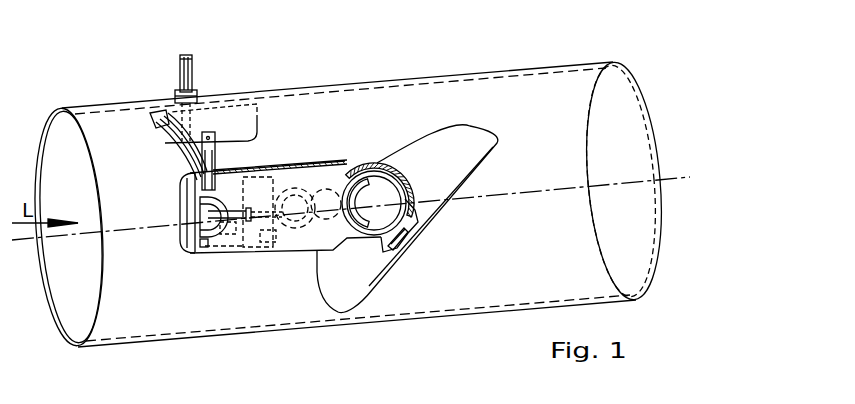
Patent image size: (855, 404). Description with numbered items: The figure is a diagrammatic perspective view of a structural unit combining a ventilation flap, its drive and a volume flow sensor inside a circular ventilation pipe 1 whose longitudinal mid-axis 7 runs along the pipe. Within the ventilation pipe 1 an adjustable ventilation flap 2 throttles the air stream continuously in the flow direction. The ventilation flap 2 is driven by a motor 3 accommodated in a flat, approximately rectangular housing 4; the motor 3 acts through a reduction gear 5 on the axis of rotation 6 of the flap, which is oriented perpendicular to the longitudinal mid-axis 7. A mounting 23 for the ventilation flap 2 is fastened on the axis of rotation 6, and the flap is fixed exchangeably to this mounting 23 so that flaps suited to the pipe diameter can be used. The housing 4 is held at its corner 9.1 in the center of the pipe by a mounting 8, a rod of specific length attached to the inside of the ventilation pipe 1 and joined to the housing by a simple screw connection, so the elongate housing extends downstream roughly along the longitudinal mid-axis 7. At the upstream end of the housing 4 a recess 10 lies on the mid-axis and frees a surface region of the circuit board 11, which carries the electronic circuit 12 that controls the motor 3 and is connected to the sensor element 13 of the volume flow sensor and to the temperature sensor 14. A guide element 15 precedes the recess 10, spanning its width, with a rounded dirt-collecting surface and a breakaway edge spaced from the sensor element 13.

The ventilation pipe 1 is at (78, 347).
The ventilation flap 2 is at (340, 303).
The motor 3 is at (290, 193).
The housing 4 is at (312, 180).
The reduction gear 5 is at (325, 202).
The axis of rotation 6 is at (371, 202).
The longitudinal mid-axis 7 is at (671, 176).
The mounting 8 is at (227, 122).
The corner 9.1 is at (158, 114).
The recess 10 is at (226, 228).
The circuit board 11 is at (268, 236).
The electronic circuit 12 is at (253, 212).
The sensor element 13 is at (208, 213).
The temperature sensor 14 is at (208, 243).
The guide element 15 is at (183, 208).
The mounting 23 is at (385, 219).